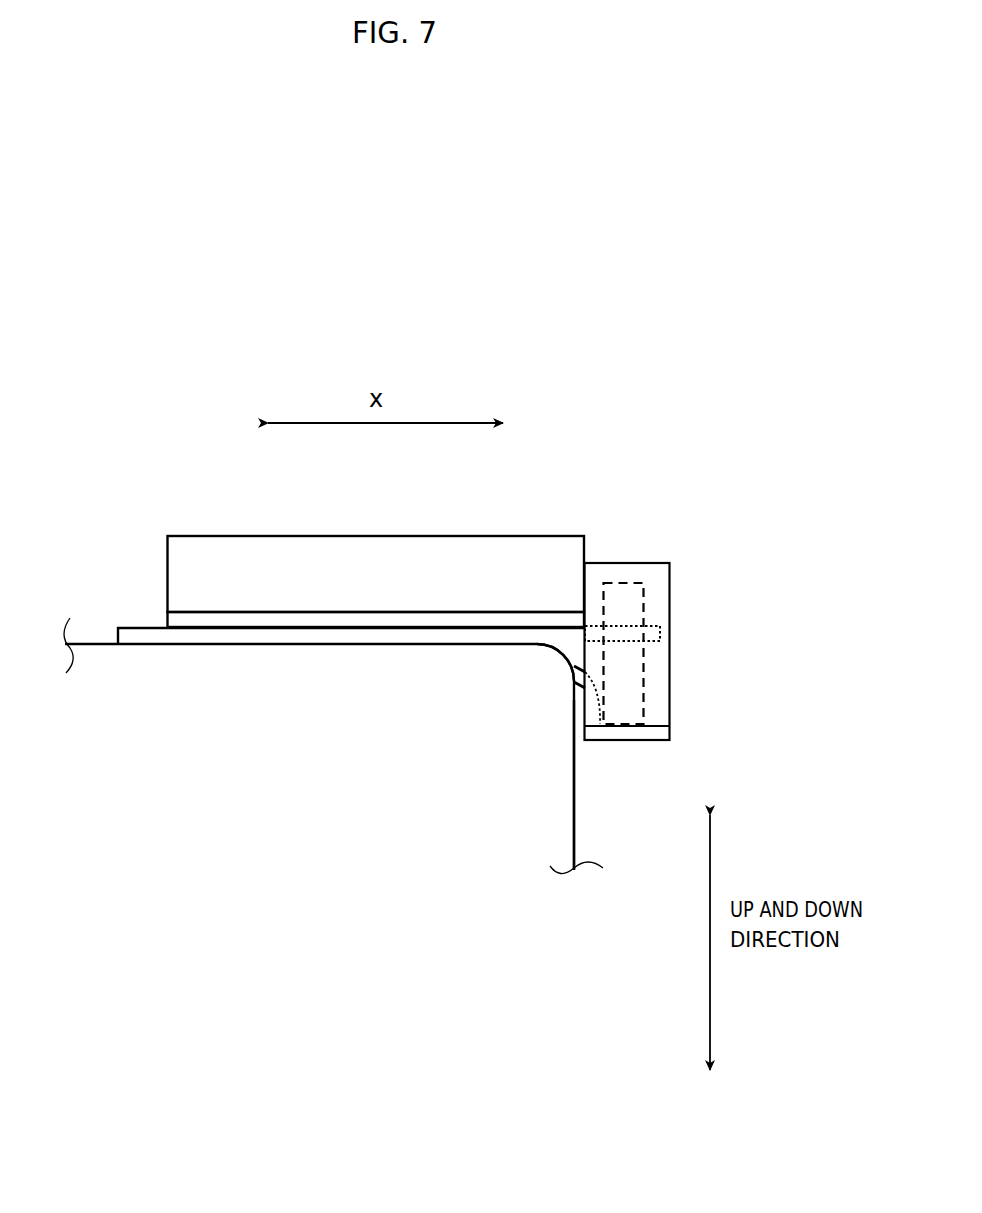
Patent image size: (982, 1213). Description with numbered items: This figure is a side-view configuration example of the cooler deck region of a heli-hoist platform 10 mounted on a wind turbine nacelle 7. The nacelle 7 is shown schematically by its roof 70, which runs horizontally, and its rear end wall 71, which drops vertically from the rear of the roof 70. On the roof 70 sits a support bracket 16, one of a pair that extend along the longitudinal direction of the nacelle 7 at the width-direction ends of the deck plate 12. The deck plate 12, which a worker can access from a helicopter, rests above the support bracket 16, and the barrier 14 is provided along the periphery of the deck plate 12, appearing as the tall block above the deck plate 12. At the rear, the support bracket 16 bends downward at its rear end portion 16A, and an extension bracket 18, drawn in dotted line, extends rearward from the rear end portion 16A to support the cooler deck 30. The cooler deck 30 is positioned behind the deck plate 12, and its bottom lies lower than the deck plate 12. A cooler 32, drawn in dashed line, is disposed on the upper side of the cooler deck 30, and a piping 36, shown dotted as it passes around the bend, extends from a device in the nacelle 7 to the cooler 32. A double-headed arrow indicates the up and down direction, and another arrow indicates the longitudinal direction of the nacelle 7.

The nacelle 7 is at (160, 300).
The heli-hoist platform 10 is at (630, 452).
The deck plate 12 is at (365, 620).
The barrier 14 is at (280, 536).
The support bracket 16 is at (140, 626).
The rear end portion of support bracket 16A is at (580, 649).
The extension bracket 18 is at (660, 636).
The cooler deck 30 is at (670, 733).
The cooler 32 is at (644, 600).
The piping 36 is at (584, 717).
The roof 70 is at (93, 642).
The rear end wall 71 is at (576, 820).